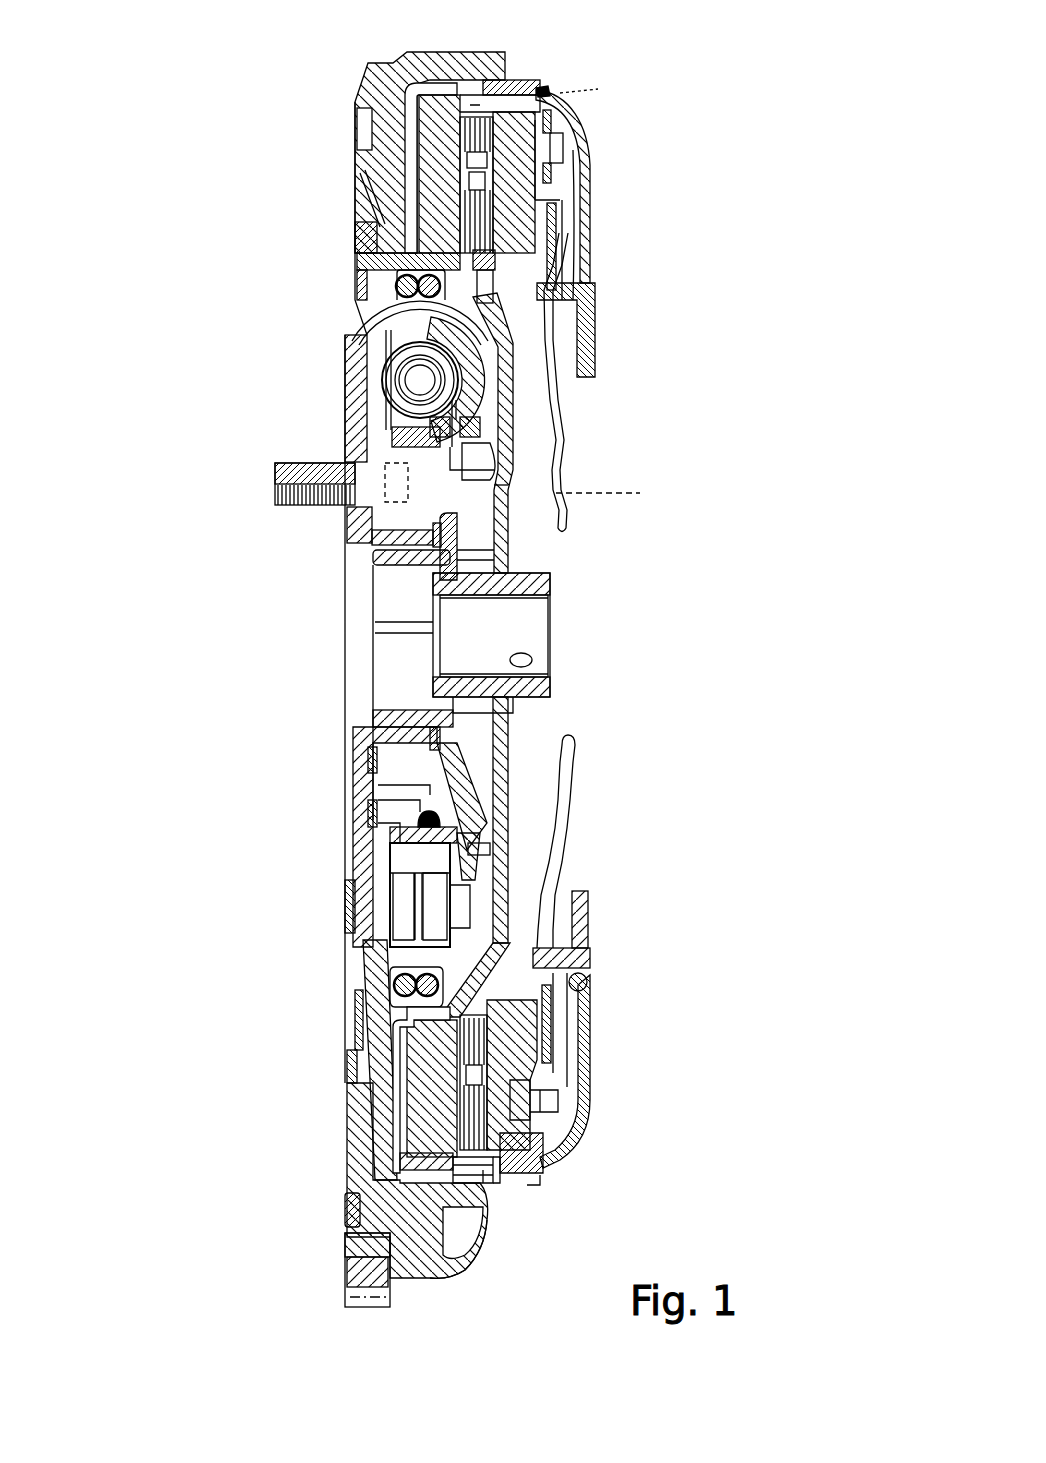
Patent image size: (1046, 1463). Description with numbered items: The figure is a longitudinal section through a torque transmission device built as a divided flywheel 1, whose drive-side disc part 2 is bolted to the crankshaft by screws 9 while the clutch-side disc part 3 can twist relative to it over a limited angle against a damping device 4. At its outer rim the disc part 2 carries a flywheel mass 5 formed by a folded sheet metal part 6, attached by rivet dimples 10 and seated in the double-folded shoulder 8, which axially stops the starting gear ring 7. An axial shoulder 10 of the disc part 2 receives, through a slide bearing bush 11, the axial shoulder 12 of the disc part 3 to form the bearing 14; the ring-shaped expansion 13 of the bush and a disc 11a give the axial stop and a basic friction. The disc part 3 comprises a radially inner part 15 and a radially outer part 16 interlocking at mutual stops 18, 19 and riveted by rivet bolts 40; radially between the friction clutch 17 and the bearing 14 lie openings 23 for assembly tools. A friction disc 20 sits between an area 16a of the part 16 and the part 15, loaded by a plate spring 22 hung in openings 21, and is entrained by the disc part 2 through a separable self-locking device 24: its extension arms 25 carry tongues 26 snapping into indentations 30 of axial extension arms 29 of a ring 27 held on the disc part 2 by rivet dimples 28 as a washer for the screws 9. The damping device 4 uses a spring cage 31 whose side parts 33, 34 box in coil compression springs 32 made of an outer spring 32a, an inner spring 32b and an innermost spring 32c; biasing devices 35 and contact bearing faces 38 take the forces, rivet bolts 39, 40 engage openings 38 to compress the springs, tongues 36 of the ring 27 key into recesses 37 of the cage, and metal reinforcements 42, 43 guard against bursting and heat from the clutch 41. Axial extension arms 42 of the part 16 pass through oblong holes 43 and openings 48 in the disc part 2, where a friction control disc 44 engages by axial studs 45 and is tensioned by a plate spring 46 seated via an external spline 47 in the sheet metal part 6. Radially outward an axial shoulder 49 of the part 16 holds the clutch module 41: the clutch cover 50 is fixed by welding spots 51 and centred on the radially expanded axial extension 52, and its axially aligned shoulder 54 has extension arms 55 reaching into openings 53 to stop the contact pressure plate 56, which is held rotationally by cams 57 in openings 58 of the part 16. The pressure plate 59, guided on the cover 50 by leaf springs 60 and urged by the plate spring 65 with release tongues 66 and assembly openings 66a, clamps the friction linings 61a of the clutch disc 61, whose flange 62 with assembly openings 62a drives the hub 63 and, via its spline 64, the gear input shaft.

The divided flywheel 1 is at (676, 137).
The disc part on the drive side 2 is at (338, 355).
The disc part on the clutch side 3 is at (478, 768).
The damping device 4 is at (527, 330).
The flywheel mass 5 is at (323, 1245).
The folded sheet metal part 6 is at (357, 1148).
The starting gear ring 7 is at (356, 1272).
The double-folded shoulder 8 is at (465, 1237).
The screws 9 is at (306, 507).
The axial shoulder 10 is at (396, 562).
The slide bearing bush 11 is at (372, 547).
The disc 11a is at (462, 563).
The axial shoulder 12 is at (380, 572).
The ring-shaped expansion 13 is at (436, 521).
The bearing 14 is at (478, 540).
The radially inner part 15 is at (512, 905).
The radially outer part 16 is at (560, 282).
The area 16a is at (500, 500).
The friction clutch 17 is at (492, 848).
The mutual stop 18 is at (480, 412).
The mutual stop 19 is at (560, 958).
The friction disc 20 is at (476, 426).
The openings 21 is at (474, 397).
The plate spring 22 is at (470, 447).
The openings 23 is at (495, 833).
The separable self-locking device 24 is at (462, 787).
The extension arms 25 is at (400, 787).
The tongues 26 is at (398, 808).
The ring 27 is at (378, 748).
The carrier 28 is at (395, 770).
The axial extension arms 29 is at (390, 825).
The indentations 30 is at (420, 832).
The spring cage 31 is at (380, 318).
The coil compression springs 32 is at (380, 343).
The outer spring 32a is at (396, 397).
The spring 32b is at (389, 392).
The spring 32c is at (384, 372).
The side part 33 is at (405, 438).
The side part 34 is at (400, 416).
The biasing devices 35 is at (466, 340).
The tongues 36 is at (395, 802).
The recesses 37 is at (400, 897).
The openings 38 is at (384, 950).
The rivet bolts 39 is at (440, 900).
The rivet bolts 40 is at (589, 918).
The clutch 41 is at (592, 1063).
The extension arms 42 is at (357, 210).
The oblong holes 43 is at (396, 290).
The friction control disc 44 is at (350, 1030).
The axial studs 45 is at (356, 252).
The plate spring 46 is at (357, 233).
The external spline 47 is at (402, 196).
The openings 48 is at (357, 262).
The axial shoulder 49 is at (428, 94).
The clutch cover 50 is at (598, 90).
The welding spots 51 is at (548, 88).
The axial extension 52 is at (527, 1173).
The openings 53 is at (483, 1190).
The axially aligned shoulder 54 is at (505, 1166).
The extension arms 55 is at (497, 1183).
The contact pressure plate 56 is at (357, 1064).
The cams 57 is at (380, 1096).
The openings 58 is at (366, 160).
The pressure plate 59 is at (517, 150).
The leaf springs 60 is at (536, 178).
The clutch disc 61 is at (578, 333).
The friction linings 61a is at (580, 1045).
The flange 62 is at (503, 732).
The openings 62a is at (490, 470).
The hub 63 is at (520, 580).
The spline 64 is at (524, 597).
The plate spring 65 is at (585, 992).
The plate spring tongues 66 is at (553, 414).
The openings 66a is at (627, 498).